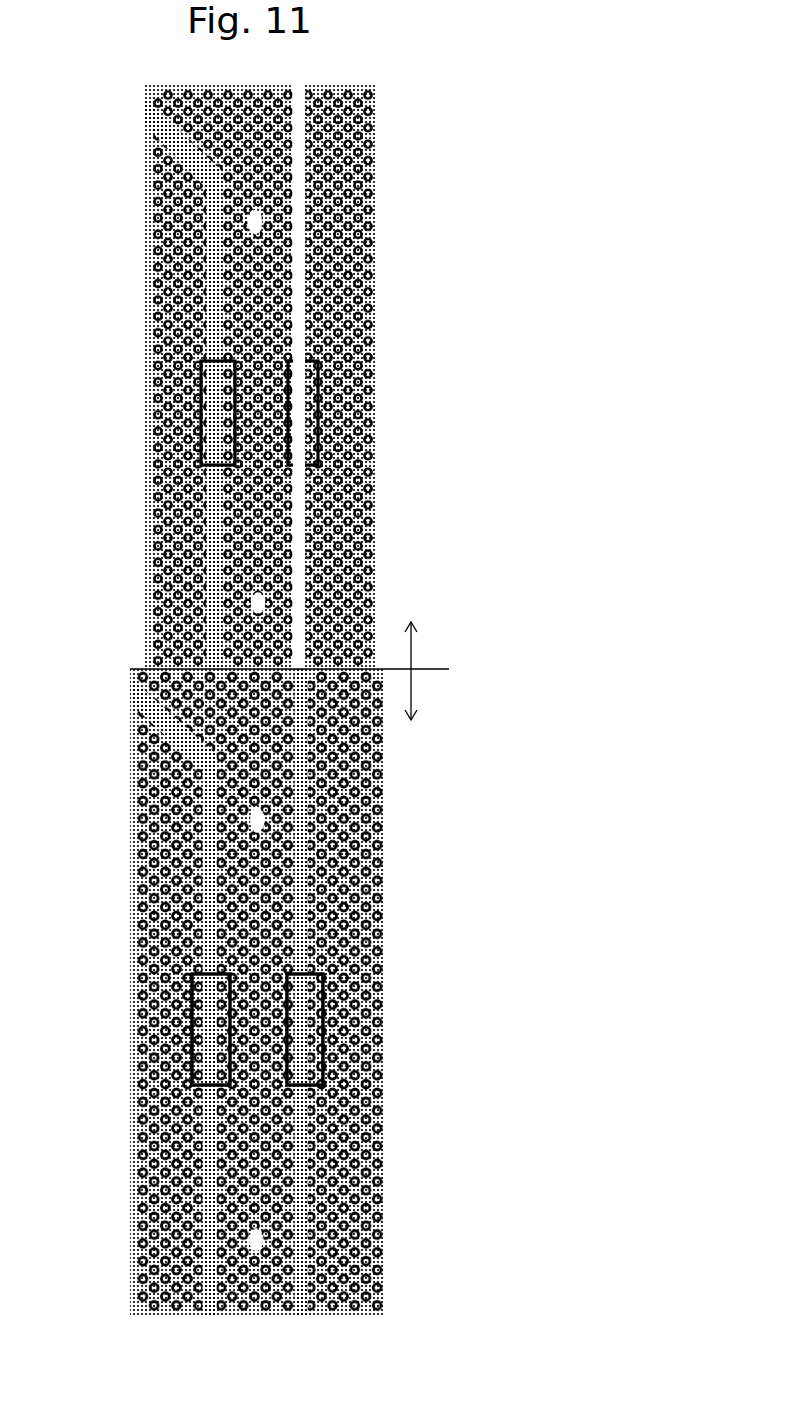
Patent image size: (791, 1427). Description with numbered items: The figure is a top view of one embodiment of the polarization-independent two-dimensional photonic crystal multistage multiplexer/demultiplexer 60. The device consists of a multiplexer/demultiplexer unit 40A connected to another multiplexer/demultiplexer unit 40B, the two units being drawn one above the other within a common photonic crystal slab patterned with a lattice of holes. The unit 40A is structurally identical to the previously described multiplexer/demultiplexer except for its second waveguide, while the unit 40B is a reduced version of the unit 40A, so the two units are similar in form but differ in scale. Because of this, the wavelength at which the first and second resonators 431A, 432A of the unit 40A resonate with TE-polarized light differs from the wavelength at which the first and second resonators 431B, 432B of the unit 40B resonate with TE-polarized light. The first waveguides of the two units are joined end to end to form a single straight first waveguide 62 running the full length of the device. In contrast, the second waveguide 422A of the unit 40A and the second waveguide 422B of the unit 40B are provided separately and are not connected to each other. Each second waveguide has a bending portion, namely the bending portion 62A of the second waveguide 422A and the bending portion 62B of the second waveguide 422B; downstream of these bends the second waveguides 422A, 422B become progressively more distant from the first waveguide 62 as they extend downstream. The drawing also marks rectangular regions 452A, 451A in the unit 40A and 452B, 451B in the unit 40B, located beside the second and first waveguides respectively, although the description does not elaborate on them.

The multistage multiplexer/demultiplexer 60 is at (454, 1317).
The first waveguide 62 is at (305, 885).
The bending portion 62A is at (207, 763).
The bending portion 62B is at (218, 176).
The multiplexer/demultiplexer unit 40A is at (294, 701).
The multiplexer/demultiplexer unit 40B is at (431, 639).
The second waveguide 422A is at (212, 863).
The second waveguide 422B is at (218, 265).
The second resonator 432A is at (257, 822).
The second resonator 432B is at (260, 228).
The first resonator 431A is at (250, 1238).
The first resonator 431B is at (258, 603).
The terminal portion of region A 452A is at (195, 975).
The terminal portion of region B 452B is at (205, 359).
The terminal portion of region A 451A is at (322, 975).
The terminal portion of region B 451B is at (318, 360).